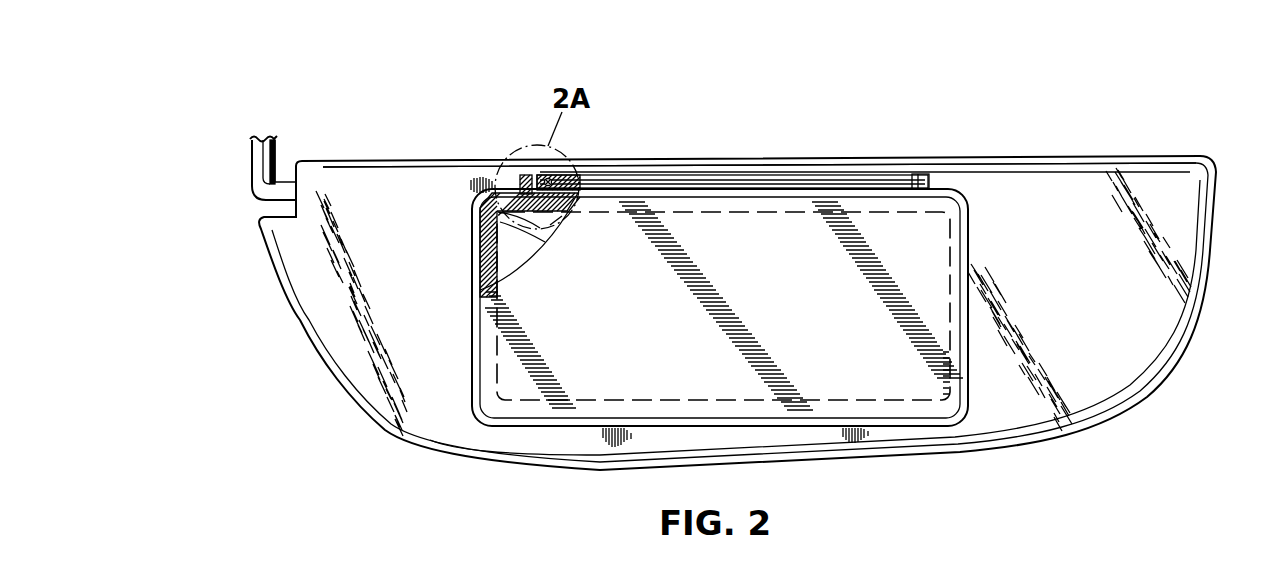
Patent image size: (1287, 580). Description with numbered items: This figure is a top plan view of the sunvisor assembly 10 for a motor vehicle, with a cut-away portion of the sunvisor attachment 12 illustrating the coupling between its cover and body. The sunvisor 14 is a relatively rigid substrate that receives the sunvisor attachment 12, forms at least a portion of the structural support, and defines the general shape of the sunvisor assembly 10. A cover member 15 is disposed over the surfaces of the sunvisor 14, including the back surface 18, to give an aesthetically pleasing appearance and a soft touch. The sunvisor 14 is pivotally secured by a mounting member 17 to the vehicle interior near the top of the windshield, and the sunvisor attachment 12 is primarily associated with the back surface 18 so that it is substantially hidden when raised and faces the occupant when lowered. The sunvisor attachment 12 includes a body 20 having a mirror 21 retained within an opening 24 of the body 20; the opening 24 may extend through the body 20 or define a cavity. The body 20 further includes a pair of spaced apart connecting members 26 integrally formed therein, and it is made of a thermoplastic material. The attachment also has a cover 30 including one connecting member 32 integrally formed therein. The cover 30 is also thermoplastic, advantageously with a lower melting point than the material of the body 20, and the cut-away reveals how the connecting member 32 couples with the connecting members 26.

The sunvisor assembly 10 is at (1237, 87).
The sunvisor attachment 12 is at (1012, 268).
The sunvisor 14 is at (323, 317).
The cover member 15 is at (1125, 157).
The mounting member 17 is at (252, 163).
The back surface 18 is at (1066, 309).
The body 20 is at (480, 276).
The mirror 21 is at (497, 246).
The opening 24 is at (486, 206).
The connecting members 26 is at (530, 175).
The cover 30 is at (972, 243).
The connecting member 32 is at (787, 174).